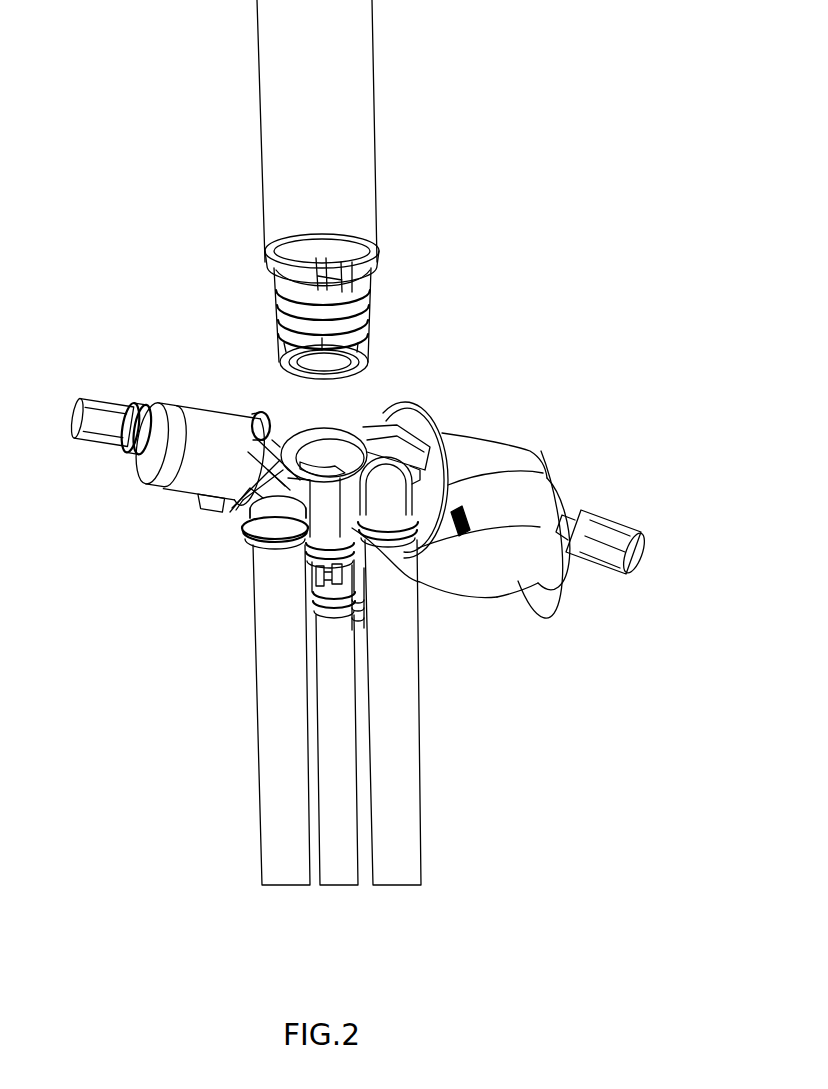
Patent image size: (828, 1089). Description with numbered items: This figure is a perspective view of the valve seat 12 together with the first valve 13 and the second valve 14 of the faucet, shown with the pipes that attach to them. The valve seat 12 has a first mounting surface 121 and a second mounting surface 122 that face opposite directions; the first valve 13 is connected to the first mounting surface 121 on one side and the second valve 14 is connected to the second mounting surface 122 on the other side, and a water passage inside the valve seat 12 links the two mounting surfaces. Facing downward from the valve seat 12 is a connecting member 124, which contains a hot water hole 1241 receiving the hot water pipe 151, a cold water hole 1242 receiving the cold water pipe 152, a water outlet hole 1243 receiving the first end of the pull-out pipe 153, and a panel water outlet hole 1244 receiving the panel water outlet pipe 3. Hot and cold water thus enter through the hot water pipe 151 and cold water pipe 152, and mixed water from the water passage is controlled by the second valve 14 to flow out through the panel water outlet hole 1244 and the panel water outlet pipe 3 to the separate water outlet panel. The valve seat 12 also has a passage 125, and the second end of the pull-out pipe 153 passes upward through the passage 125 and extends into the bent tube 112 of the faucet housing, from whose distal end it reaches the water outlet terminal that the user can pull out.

The bent tube 112 is at (297, 103).
The passage 125 is at (330, 450).
The valve seat 12 is at (415, 401).
The first mounting surface 121 is at (443, 425).
The water outlet hole 1243 is at (392, 503).
The second valve 14 is at (197, 468).
The cold water hole 1242 is at (638, 545).
The second mounting surface 122 is at (243, 500).
The connecting member 124 is at (235, 557).
The first valve 13 is at (495, 567).
The panel water outlet hole 1244 is at (290, 513).
The hot water hole 1241 is at (322, 527).
The hot water pipe 151 is at (362, 678).
The cold water pipe 152 is at (340, 720).
The pull-out pipe 153 is at (400, 823).
The panel water outlet pipe 3 is at (343, 712).